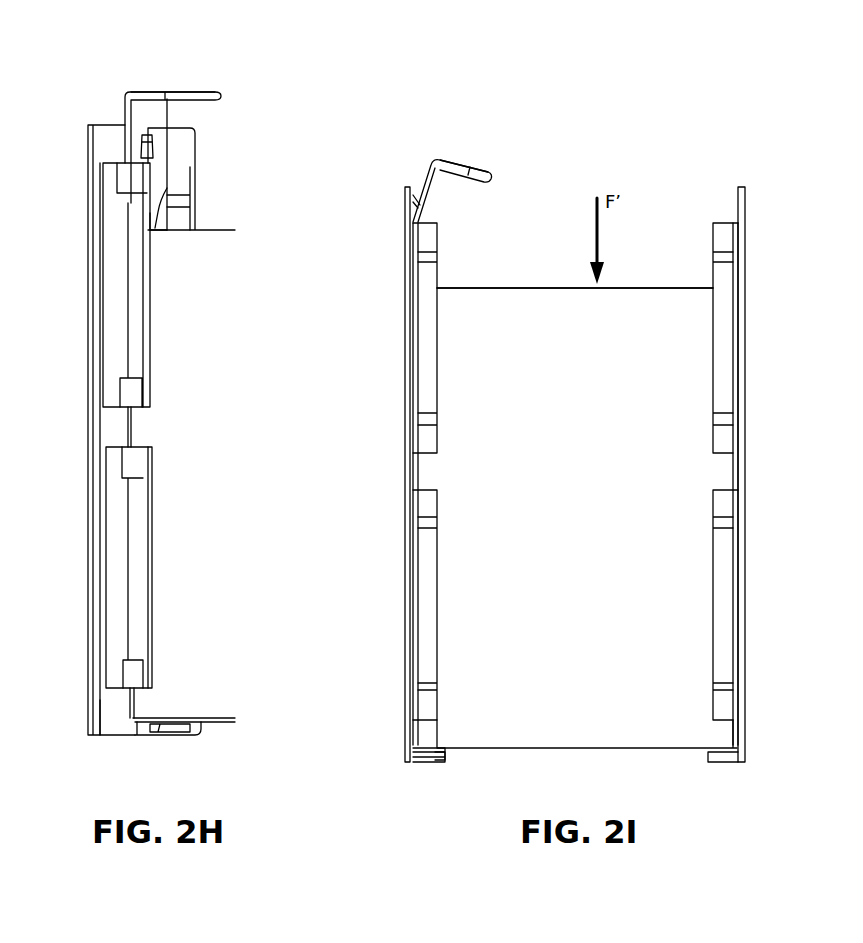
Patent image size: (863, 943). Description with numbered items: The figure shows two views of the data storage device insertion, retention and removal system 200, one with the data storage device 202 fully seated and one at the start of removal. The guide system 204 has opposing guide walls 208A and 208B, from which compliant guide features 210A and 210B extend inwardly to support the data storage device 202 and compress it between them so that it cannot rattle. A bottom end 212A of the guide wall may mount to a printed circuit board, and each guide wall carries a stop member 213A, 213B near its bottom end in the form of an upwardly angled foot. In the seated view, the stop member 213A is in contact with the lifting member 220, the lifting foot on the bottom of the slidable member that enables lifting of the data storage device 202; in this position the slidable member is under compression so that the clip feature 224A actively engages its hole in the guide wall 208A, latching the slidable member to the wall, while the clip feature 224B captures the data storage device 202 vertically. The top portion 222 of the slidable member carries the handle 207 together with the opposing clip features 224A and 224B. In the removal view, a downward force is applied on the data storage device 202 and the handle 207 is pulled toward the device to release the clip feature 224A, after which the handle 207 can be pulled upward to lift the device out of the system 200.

In FIG. 2H, the system 200 is at (265, 80).
In FIG. 2I, the system 200 is at (696, 153).
In FIG. 2H, the data storage device 202 is at (184, 572).
In FIG. 2I, the data storage device 202 is at (587, 518).
In FIG. 2H, the guide system 204 is at (78, 384).
In FIG. 2I, the guide system 204 is at (380, 394).
In FIG. 2H, the handle 207 is at (186, 92).
In FIG. 2I, the handle 207 is at (452, 162).
In FIG. 2H, the guide wall 208A is at (103, 140).
In FIG. 2I, the guide wall 208A is at (408, 318).
In FIG. 2I, the guide wall 208B is at (740, 272).
In FIG. 2H, the guide feature 210A is at (133, 283).
In FIG. 2I, the guide feature 210A is at (433, 398).
In FIG. 2I, the guide feature 210B is at (717, 377).
In FIG. 2H, the bottom end 212A is at (107, 712).
In FIG. 2H, the stop member 213A is at (163, 735).
In FIG. 2I, the stop member 213A is at (436, 757).
In FIG. 2I, the stop member 213B is at (712, 758).
In FIG. 2H, the lifting member 220 is at (152, 726).
In FIG. 2I, the lifting member 220 is at (422, 762).
In FIG. 2H, the top portion 222 is at (112, 106).
In FIG. 2I, the top portion 222 is at (445, 211).
In FIG. 2H, the clip feature 224A is at (150, 152).
In FIG. 2I, the clip feature 224A is at (414, 198).
In FIG. 2H, the clip feature 224B is at (160, 225).